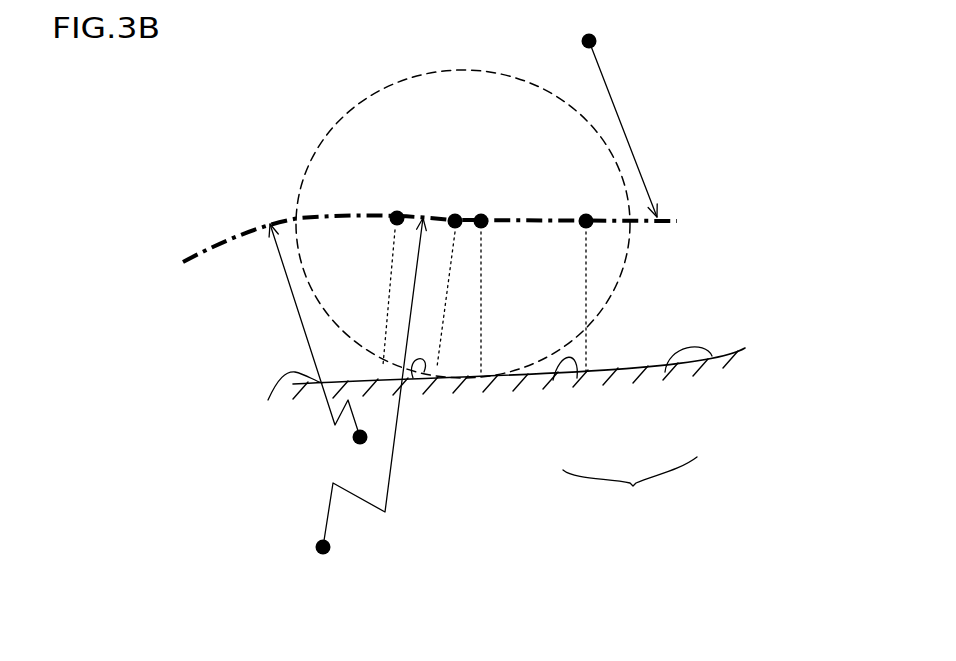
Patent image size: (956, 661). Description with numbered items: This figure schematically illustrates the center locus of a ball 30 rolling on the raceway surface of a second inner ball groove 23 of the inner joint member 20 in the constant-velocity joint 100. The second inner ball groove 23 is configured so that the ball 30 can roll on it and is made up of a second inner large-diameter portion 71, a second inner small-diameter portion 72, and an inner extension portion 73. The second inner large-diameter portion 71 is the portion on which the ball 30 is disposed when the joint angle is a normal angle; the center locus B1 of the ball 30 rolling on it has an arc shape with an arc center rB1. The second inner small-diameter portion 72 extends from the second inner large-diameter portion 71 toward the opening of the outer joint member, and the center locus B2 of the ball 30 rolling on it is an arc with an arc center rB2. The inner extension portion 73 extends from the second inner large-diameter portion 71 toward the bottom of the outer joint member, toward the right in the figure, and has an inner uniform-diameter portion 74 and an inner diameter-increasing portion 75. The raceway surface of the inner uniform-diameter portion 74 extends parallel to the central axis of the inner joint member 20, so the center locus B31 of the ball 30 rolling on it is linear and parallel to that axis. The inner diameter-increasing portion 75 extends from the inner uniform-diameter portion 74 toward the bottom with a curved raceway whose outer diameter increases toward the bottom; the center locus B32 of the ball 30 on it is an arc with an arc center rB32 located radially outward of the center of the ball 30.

The constant-velocity joint 100 is at (180, 165).
The inner joint member 20 is at (384, 265).
The second inner ball groove 23 is at (250, 315).
The ball 30 is at (622, 278).
The center locus of the ball B1 is at (448, 217).
The center locus of the ball B2 is at (268, 222).
The center locus of the ball B31 is at (507, 222).
The center locus of the ball B32 is at (673, 223).
The arc center rB1 is at (332, 549).
The arc center rB2 is at (352, 438).
The arc center rB32 is at (596, 44).
The second inner large-diameter portion 71 is at (424, 372).
The second inner small-diameter portion 72 is at (282, 400).
The inner extension portion 73 is at (632, 430).
The inner uniform-diameter portion 74 is at (577, 378).
The inner diameter-increasing portion 75 is at (665, 372).